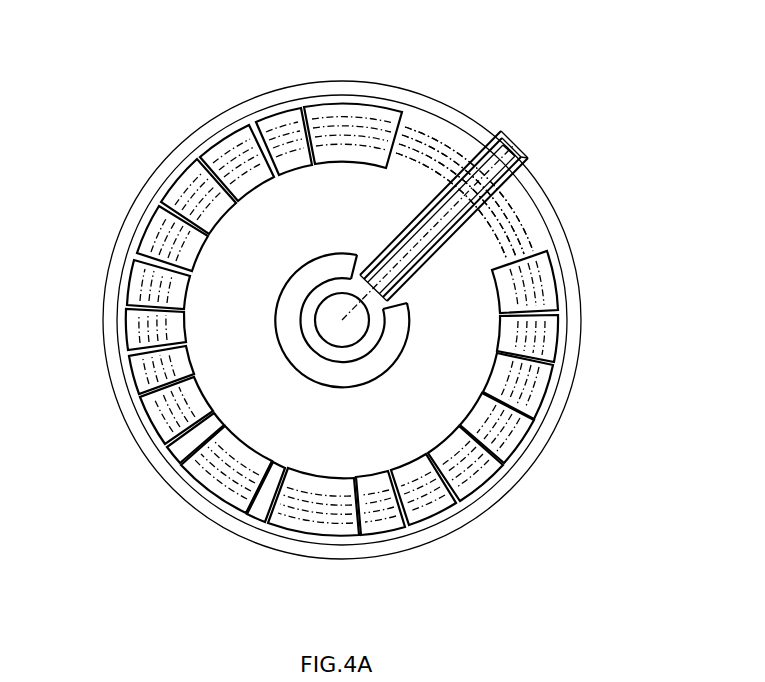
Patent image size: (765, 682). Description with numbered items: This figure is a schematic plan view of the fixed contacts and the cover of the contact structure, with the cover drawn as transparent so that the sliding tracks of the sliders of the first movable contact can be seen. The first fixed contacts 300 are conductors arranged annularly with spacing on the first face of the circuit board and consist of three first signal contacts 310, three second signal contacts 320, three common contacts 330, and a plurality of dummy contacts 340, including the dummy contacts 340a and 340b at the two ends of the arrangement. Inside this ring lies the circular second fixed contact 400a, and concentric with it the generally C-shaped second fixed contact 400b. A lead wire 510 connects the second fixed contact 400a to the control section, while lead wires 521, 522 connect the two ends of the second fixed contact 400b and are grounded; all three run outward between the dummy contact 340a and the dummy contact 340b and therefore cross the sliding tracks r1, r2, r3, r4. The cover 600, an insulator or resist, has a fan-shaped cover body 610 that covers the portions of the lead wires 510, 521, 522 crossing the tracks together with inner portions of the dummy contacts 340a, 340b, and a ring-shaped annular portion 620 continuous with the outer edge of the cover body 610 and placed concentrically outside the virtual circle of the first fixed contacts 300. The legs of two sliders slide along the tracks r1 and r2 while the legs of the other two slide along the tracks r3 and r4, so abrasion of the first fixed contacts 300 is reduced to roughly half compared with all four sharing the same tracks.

The first fixed contacts 300 is at (350, 537).
The first signal contact 310 is at (550, 338).
The second signal contact 320 is at (150, 278).
The common contact 330 is at (318, 535).
The dummy contact 340 is at (540, 392).
The dummy contact 340a is at (332, 108).
The dummy contact 340b is at (550, 297).
The second fixed contact 400a is at (352, 325).
The second fixed contact 400b is at (388, 348).
The lead wire 510 is at (522, 150).
The lead wire 521 is at (505, 135).
The lead wire 522 is at (535, 170).
The cover 600 is at (345, 42).
The cover body 610 is at (370, 175).
The annular portion 620 is at (360, 97).
The sliding track r1 is at (527, 202).
The sliding track r2 is at (523, 220).
The sliding track r3 is at (530, 240).
The sliding track r4 is at (537, 265).